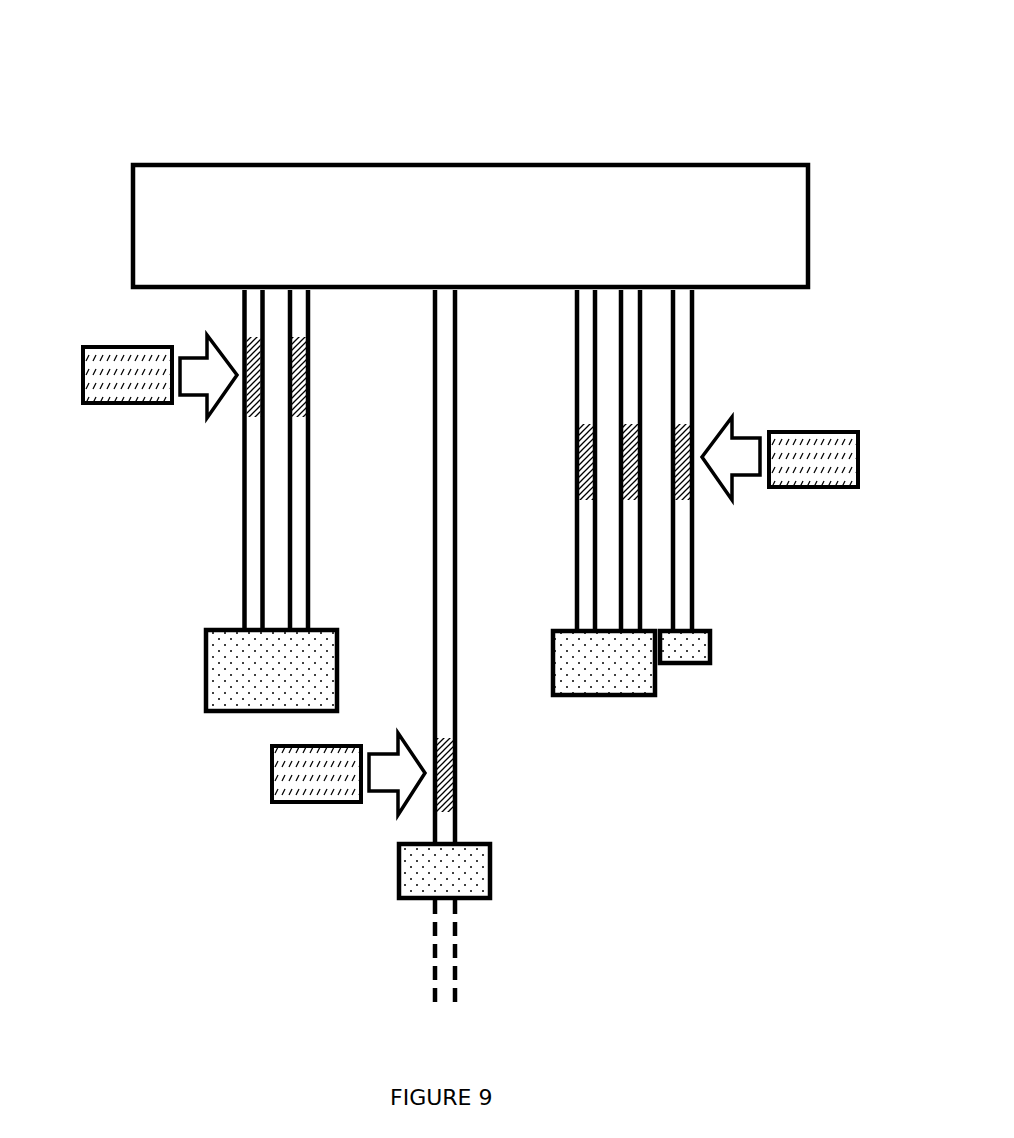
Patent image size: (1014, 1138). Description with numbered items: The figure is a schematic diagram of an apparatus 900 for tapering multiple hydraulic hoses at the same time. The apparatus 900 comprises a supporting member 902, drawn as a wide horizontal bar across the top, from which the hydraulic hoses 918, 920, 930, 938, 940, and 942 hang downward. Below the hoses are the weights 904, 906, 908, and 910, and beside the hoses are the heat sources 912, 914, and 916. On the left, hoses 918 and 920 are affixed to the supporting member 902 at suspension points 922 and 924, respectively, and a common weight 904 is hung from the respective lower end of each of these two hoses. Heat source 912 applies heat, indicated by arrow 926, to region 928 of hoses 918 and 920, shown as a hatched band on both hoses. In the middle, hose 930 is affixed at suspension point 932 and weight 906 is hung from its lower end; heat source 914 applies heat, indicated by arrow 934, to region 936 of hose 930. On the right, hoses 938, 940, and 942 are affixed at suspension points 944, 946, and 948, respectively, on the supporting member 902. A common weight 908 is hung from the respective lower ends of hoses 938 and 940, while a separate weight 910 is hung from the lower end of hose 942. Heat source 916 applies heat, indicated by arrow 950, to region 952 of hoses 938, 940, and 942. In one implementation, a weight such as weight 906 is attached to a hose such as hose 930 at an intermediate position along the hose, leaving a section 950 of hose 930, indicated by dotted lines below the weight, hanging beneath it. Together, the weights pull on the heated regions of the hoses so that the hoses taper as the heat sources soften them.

The apparatus 900 is at (116, 57).
The supporting member 902 is at (808, 200).
The common weight 904 is at (206, 686).
The weight 906 is at (491, 866).
The common weight 908 is at (656, 680).
The weight 910 is at (710, 645).
The heat source 912 is at (83, 385).
The heat source 914 is at (272, 780).
The heat source 916 is at (858, 451).
The hydraulic hose 918 is at (252, 481).
The hydraulic hose 920 is at (305, 517).
The suspension point 922 is at (253, 277).
The suspension point 924 is at (299, 277).
The arrow 926 is at (197, 398).
The region 928 is at (320, 337).
The hydraulic hose 930 is at (441, 565).
The suspension point 932 is at (445, 277).
The arrow 934 is at (385, 795).
The region 936 is at (468, 738).
The hydraulic hose 938 is at (585, 310).
The hydraulic hose 940 is at (634, 345).
The hydraulic hose 942 is at (685, 386).
The suspension point 944 is at (585, 277).
The suspension point 946 is at (630, 277).
The suspension point 948 is at (685, 277).
The arrow / section of hose 950 is at (746, 478).
The region 952 is at (562, 424).